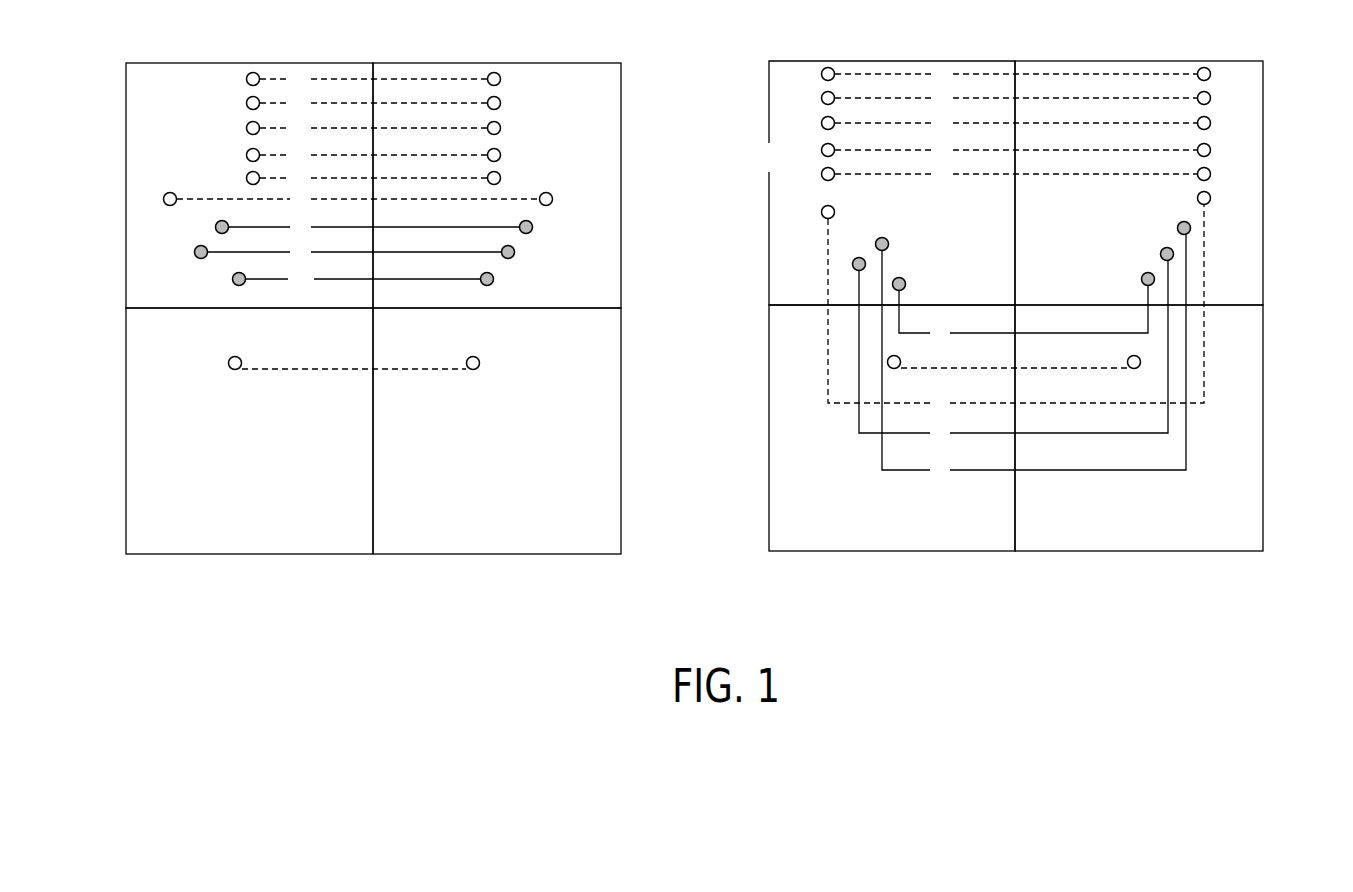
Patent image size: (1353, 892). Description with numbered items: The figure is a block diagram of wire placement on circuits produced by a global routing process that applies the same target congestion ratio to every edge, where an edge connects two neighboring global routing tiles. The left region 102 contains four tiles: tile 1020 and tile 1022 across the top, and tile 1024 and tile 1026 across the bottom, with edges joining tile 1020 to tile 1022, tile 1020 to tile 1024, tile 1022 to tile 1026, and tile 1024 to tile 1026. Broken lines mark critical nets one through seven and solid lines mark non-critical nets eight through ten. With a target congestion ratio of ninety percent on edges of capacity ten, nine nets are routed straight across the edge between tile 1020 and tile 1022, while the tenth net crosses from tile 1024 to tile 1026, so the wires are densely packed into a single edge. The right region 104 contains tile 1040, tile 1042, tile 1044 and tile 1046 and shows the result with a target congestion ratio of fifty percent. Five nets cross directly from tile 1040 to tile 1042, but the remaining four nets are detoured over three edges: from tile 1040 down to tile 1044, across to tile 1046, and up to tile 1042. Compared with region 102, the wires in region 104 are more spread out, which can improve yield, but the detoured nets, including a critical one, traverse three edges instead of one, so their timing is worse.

The region 102 is at (124, 240).
The tile 1020 is at (138, 288).
The tile 1022 is at (606, 281).
The tile 1024 is at (138, 505).
The tile 1026 is at (606, 517).
The region 104 is at (768, 191).
The tile 1040 is at (786, 232).
The tile 1042 is at (1247, 266).
The tile 1044 is at (787, 492).
The tile 1046 is at (1247, 517).